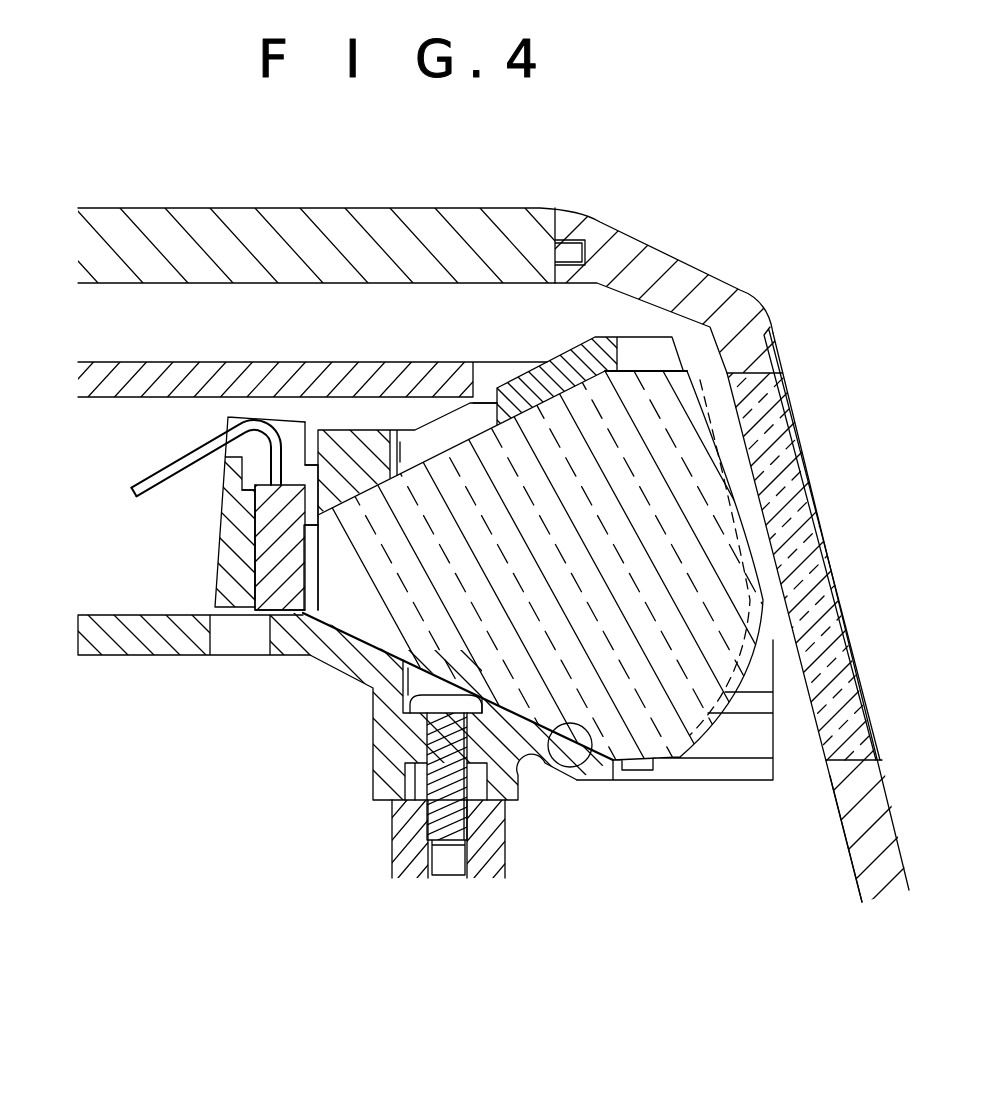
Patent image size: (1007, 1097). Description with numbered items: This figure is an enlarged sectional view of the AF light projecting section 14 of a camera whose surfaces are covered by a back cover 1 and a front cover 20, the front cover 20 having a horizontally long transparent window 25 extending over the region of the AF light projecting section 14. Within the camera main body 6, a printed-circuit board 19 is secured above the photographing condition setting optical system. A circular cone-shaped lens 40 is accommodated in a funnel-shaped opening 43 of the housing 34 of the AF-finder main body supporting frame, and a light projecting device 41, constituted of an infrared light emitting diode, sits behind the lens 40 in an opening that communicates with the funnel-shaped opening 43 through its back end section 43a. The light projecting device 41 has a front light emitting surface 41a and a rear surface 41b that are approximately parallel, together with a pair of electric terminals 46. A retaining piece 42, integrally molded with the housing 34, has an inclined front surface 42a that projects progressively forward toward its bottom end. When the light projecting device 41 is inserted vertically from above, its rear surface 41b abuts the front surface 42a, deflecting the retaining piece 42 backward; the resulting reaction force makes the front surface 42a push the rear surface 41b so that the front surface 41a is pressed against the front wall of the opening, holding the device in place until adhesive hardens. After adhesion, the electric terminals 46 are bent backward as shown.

The back cover 1 is at (386, 190).
The camera main body 6 is at (490, 838).
The AF light projecting section 14 is at (707, 367).
The printed-circuit board 19 is at (277, 375).
The front cover 20 is at (912, 805).
The transparent window 25 is at (842, 592).
The housing 34 is at (565, 362).
The lens 40 is at (690, 762).
The light projecting device 41 is at (267, 612).
The front surface 41a is at (310, 588).
The rear surface 41b is at (255, 590).
The retaining piece 42 is at (227, 553).
The front surface 42a is at (257, 556).
The funnel-shaped opening 43 is at (582, 770).
The back end section 43a is at (313, 538).
The electric terminals 46 is at (150, 481).